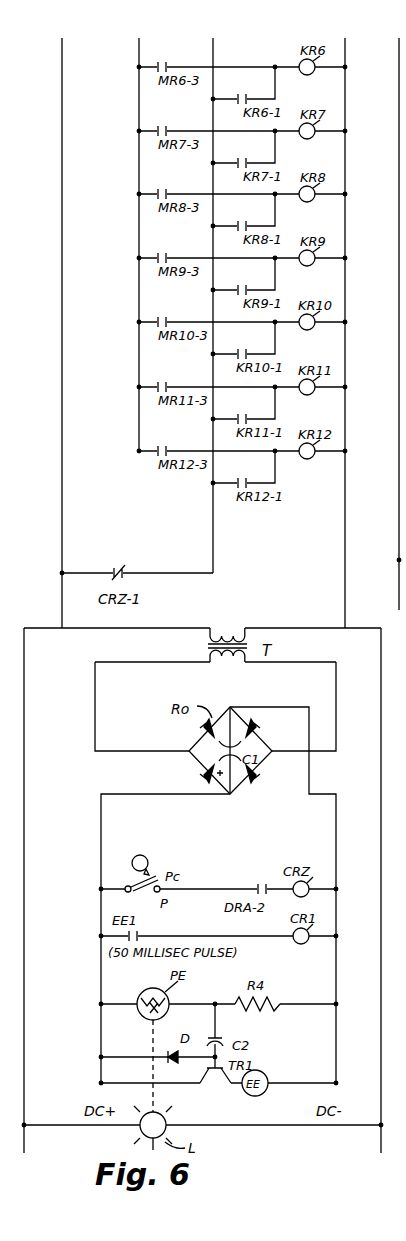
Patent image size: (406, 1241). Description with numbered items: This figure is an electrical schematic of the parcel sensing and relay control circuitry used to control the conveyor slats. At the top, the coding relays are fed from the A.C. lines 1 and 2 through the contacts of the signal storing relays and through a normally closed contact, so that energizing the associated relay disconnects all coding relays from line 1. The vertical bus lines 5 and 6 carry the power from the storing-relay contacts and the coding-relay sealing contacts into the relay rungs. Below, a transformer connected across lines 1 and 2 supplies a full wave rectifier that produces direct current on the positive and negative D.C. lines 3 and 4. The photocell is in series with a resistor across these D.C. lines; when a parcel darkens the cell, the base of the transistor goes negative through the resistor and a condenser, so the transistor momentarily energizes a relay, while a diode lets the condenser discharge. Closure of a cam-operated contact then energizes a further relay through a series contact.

The A.C. line 1 is at (230, 328).
The A.C. line 2 is at (343, 322).
The common push button line 3 is at (21, 904).
The DC negative terminal line 4 is at (380, 905).
The memory relay bus line 5 is at (137, 233).
The relay contact bus line 6 is at (211, 295).